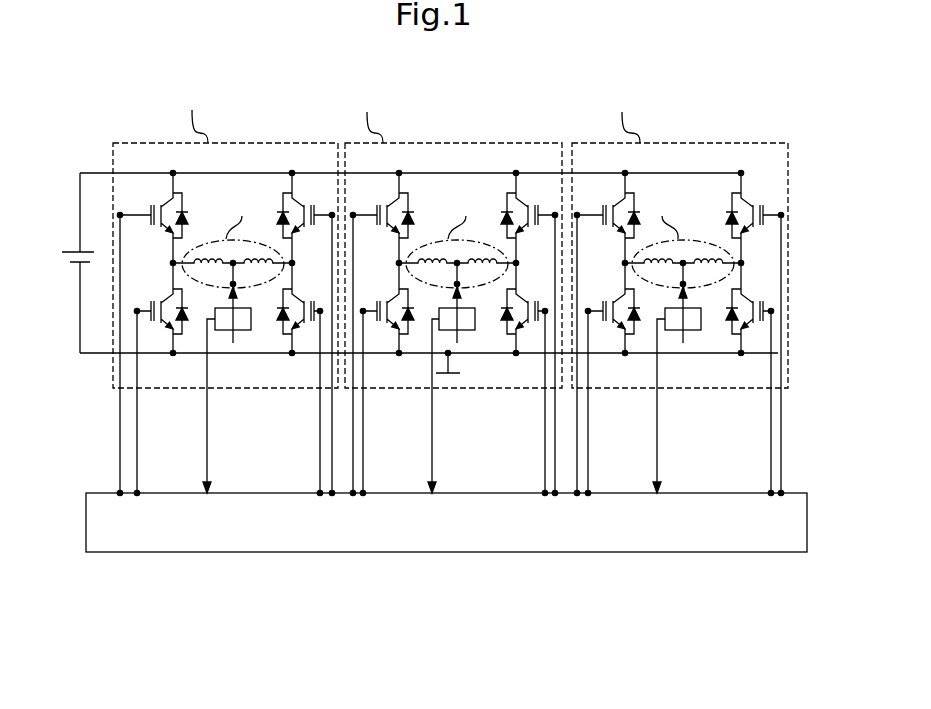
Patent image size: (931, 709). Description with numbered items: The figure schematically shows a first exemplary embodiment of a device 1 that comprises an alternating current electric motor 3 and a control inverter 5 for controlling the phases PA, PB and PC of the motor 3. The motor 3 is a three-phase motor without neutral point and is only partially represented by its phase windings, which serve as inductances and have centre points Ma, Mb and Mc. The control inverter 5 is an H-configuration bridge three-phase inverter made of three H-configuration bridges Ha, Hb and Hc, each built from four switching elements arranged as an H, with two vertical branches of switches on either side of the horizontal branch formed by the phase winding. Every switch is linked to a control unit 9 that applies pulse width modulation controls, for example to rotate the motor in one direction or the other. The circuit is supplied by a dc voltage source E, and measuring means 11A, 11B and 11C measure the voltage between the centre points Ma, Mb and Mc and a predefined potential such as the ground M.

The device 1 is at (233, 626).
The alternating current electric motor 3 is at (241, 165).
The control inverter 5 is at (364, 575).
The control unit 9 is at (464, 537).
The voltage measuring means 11A is at (240, 347).
The voltage measuring means 11B is at (466, 332).
The voltage measuring means 11C is at (672, 332).